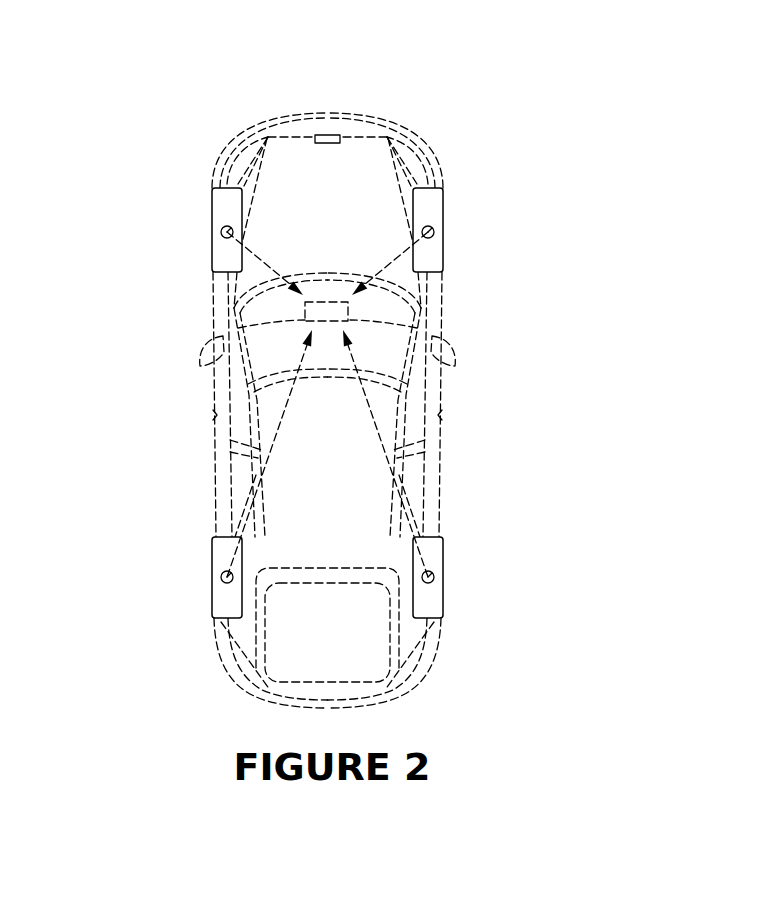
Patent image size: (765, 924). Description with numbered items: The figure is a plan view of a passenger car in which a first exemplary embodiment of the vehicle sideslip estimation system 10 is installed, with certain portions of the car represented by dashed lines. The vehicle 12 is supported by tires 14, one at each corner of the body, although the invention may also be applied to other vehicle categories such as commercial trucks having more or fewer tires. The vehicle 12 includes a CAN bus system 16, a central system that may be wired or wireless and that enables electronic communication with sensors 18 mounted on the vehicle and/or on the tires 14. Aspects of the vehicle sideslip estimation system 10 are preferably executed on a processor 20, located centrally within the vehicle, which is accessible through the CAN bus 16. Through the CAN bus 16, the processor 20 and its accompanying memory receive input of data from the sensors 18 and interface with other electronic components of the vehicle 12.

The vehicle sideslip estimation system 10 is at (530, 118).
The vehicle 12 is at (300, 114).
The tires 14 is at (212, 251).
The CAN bus system 16 is at (397, 256).
The sensors 18 is at (323, 144).
The processor 20 is at (308, 319).